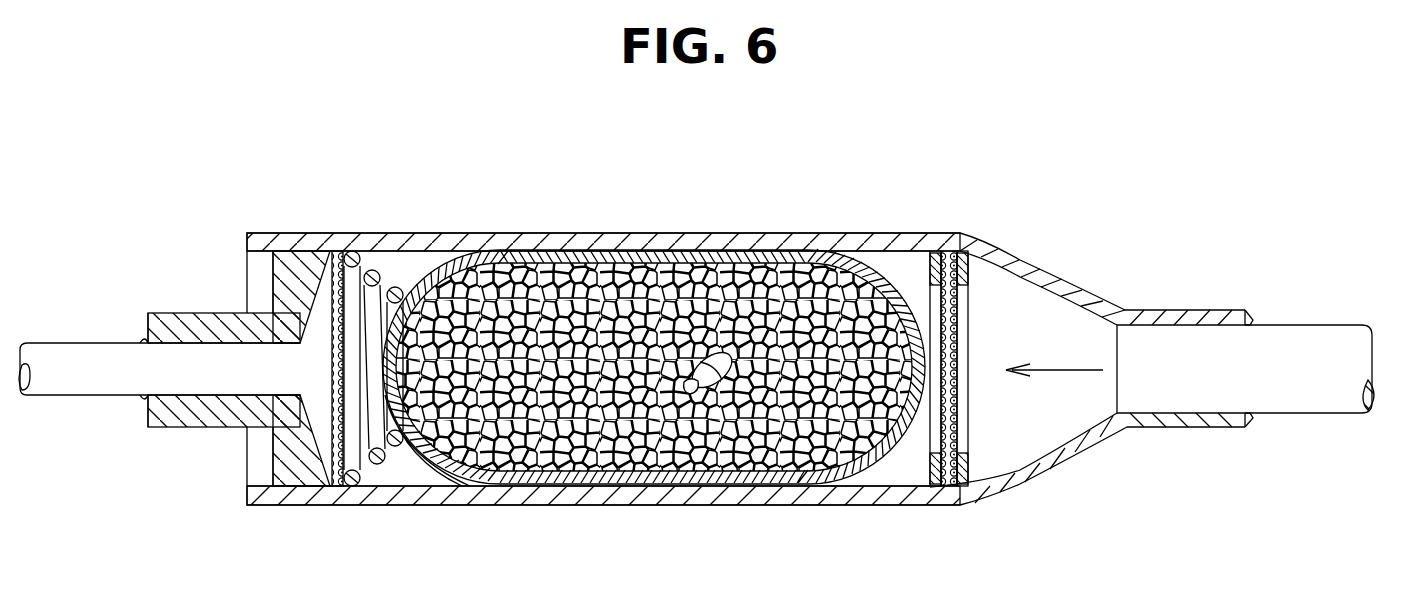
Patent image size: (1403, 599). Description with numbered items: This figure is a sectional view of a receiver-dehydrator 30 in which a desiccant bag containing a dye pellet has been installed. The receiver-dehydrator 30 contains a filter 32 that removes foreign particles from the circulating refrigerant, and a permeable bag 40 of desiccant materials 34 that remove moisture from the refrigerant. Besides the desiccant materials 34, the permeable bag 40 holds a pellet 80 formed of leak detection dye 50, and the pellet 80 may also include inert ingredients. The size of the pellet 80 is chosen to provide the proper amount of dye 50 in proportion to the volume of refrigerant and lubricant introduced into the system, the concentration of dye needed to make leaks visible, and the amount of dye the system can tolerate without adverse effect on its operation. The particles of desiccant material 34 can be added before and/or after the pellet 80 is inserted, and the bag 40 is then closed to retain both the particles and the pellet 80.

The receiver-dehydrator 30 is at (757, 497).
The filter 32 is at (950, 263).
The desiccant materials 34 is at (667, 455).
The permeable bag 40 is at (818, 258).
The leak detection dye 50 is at (690, 387).
The pellet 80 is at (723, 350).